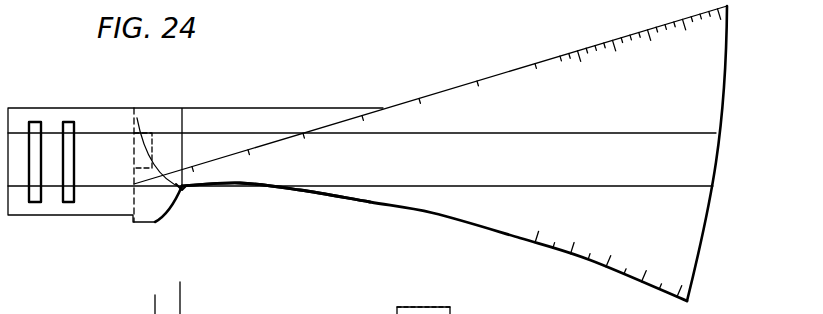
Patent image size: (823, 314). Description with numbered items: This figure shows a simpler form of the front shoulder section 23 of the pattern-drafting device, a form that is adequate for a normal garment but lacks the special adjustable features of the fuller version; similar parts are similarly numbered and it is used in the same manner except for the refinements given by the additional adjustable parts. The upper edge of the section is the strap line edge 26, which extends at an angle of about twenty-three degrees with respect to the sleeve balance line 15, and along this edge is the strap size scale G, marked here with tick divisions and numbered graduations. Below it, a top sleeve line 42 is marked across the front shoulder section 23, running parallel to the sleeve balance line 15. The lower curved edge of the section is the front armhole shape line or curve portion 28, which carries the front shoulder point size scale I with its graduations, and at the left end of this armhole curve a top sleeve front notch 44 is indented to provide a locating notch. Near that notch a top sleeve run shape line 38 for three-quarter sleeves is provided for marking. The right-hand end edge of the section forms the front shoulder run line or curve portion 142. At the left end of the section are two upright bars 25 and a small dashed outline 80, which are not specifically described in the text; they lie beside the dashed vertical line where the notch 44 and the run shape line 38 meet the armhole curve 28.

The guide bars 25 is at (67, 165).
The index window 80 is at (137, 160).
The top sleeve run shape line 38 is at (180, 184).
The top sleeve front notch 44 is at (183, 192).
The top sleeve line 42 is at (580, 134).
The sleeve balance line 15 is at (398, 185).
The strap line edge 26 is at (465, 84).
The front armhole shape line 28 is at (432, 213).
The front shoulder section 23 is at (370, 202).
The front shoulder run line 142 is at (713, 190).